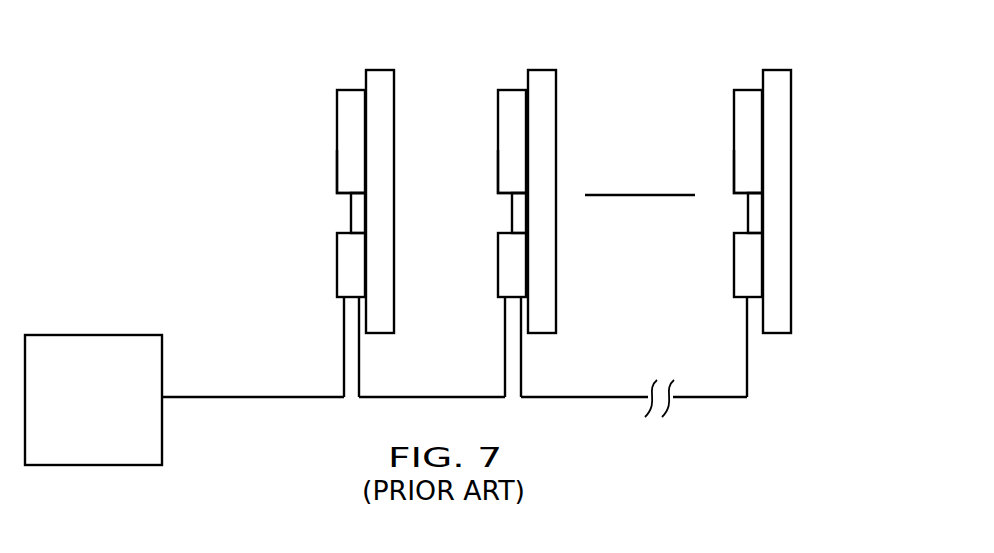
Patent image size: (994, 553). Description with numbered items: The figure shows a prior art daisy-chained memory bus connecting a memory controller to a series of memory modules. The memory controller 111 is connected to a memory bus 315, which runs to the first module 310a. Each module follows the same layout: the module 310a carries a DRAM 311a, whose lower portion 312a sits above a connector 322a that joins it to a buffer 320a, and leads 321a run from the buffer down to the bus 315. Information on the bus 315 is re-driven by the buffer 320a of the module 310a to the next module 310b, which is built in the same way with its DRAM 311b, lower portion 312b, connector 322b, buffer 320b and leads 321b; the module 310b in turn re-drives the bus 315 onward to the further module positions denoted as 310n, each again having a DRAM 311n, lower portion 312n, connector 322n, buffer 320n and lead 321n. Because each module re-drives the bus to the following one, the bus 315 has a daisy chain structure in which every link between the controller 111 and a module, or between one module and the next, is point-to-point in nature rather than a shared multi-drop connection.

The memory controller 111 is at (55, 335).
The memory bus 315 is at (257, 397).
The module 310a is at (380, 66).
The DRAM 311a is at (356, 90).
The first chip lower portion 312a is at (337, 193).
The first connector 322a is at (351, 233).
The buffer 320a is at (337, 263).
The first buffer leads 321a is at (342, 306).
The module 310b is at (546, 66).
The second memory chip 311b is at (517, 90).
The second chip lower portion 312b is at (498, 193).
The second connector 322b is at (512, 233).
The second buffer 320b is at (498, 263).
The second buffer leads 321b is at (504, 305).
The module positions 310n is at (777, 66).
The n-th memory chip 311n is at (752, 90).
The n-th chip lower portion 312n is at (734, 193).
The n-th connector 322n is at (748, 233).
The n-th buffer 320n is at (734, 264).
The n-th buffer lead 321n is at (747, 305).